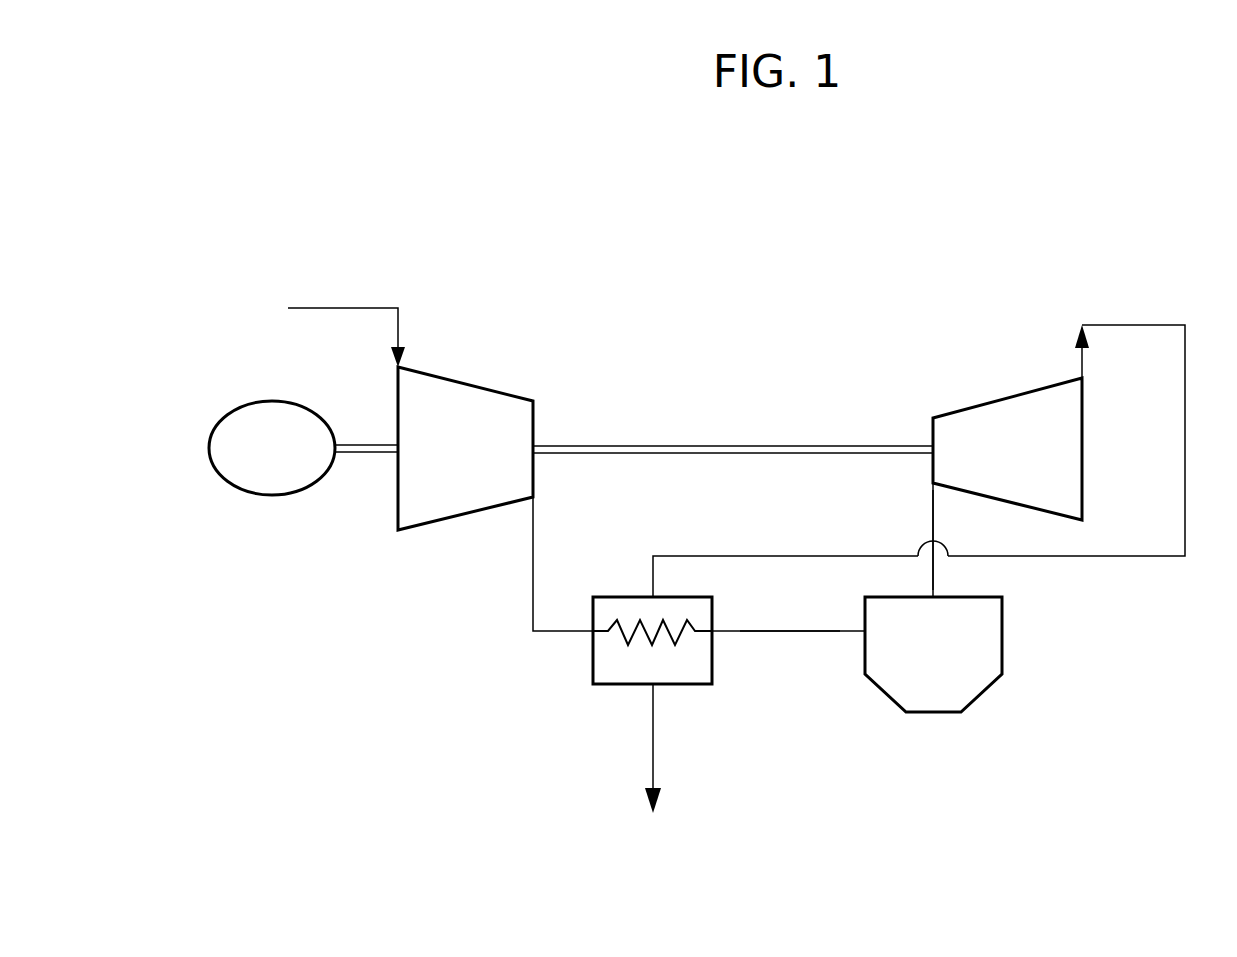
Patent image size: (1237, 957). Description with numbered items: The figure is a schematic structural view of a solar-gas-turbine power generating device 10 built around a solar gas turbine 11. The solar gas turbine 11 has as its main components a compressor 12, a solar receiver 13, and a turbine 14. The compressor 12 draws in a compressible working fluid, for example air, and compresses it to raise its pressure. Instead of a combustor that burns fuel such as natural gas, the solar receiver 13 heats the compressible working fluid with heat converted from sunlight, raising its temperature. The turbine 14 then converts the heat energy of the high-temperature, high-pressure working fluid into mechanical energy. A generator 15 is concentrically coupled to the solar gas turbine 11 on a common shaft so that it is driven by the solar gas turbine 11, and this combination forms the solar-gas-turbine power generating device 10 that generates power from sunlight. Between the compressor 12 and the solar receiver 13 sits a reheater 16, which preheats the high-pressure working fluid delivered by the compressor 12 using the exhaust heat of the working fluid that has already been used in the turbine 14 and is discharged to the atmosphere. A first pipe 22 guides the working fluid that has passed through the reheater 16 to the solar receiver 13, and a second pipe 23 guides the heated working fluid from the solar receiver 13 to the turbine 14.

The solar-gas-turbine power generating device 10 is at (518, 197).
The solar gas turbine 11 is at (695, 296).
The compressor 12 is at (470, 384).
The solar receiver 13 is at (1002, 630).
The turbine 14 is at (995, 400).
The generator 15 is at (268, 496).
The reheater 16 is at (593, 659).
The first pipe 22 is at (779, 634).
The second pipe 23 is at (933, 510).